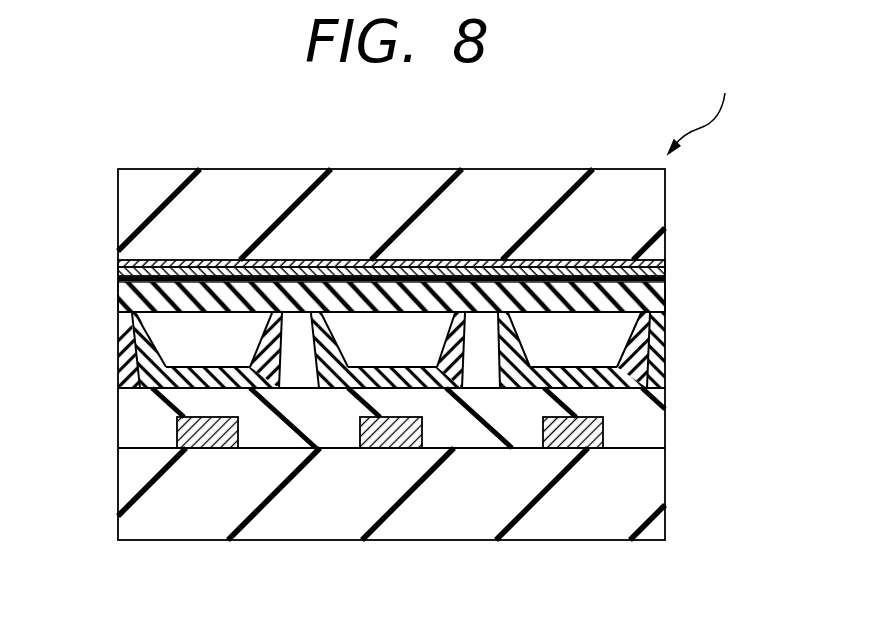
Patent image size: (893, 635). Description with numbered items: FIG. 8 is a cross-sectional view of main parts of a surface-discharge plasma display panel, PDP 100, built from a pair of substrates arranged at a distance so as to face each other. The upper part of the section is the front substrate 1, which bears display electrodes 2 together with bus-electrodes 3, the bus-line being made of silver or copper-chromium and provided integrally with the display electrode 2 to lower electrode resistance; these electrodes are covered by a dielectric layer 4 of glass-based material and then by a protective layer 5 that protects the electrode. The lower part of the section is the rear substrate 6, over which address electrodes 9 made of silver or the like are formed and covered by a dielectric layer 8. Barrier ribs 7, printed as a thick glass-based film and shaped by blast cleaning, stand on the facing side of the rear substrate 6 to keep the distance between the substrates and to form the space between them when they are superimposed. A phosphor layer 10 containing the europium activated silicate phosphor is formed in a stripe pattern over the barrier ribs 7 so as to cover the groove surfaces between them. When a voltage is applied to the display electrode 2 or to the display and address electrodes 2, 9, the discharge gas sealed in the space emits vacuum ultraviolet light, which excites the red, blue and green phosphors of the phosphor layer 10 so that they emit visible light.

The PDP 100 is at (709, 110).
The front substrate 1 is at (120, 207).
The display electrode 2 is at (665, 262).
The bus-electrode 3 is at (665, 272).
The dielectric layer 4 is at (122, 283).
The protective layer 5 is at (125, 303).
The rear substrate 6 is at (120, 505).
The barrier rib 7 is at (122, 372).
The dielectric layer 8 is at (120, 433).
The address electrode 9 is at (200, 448).
The phosphor layer 10 is at (207, 372).